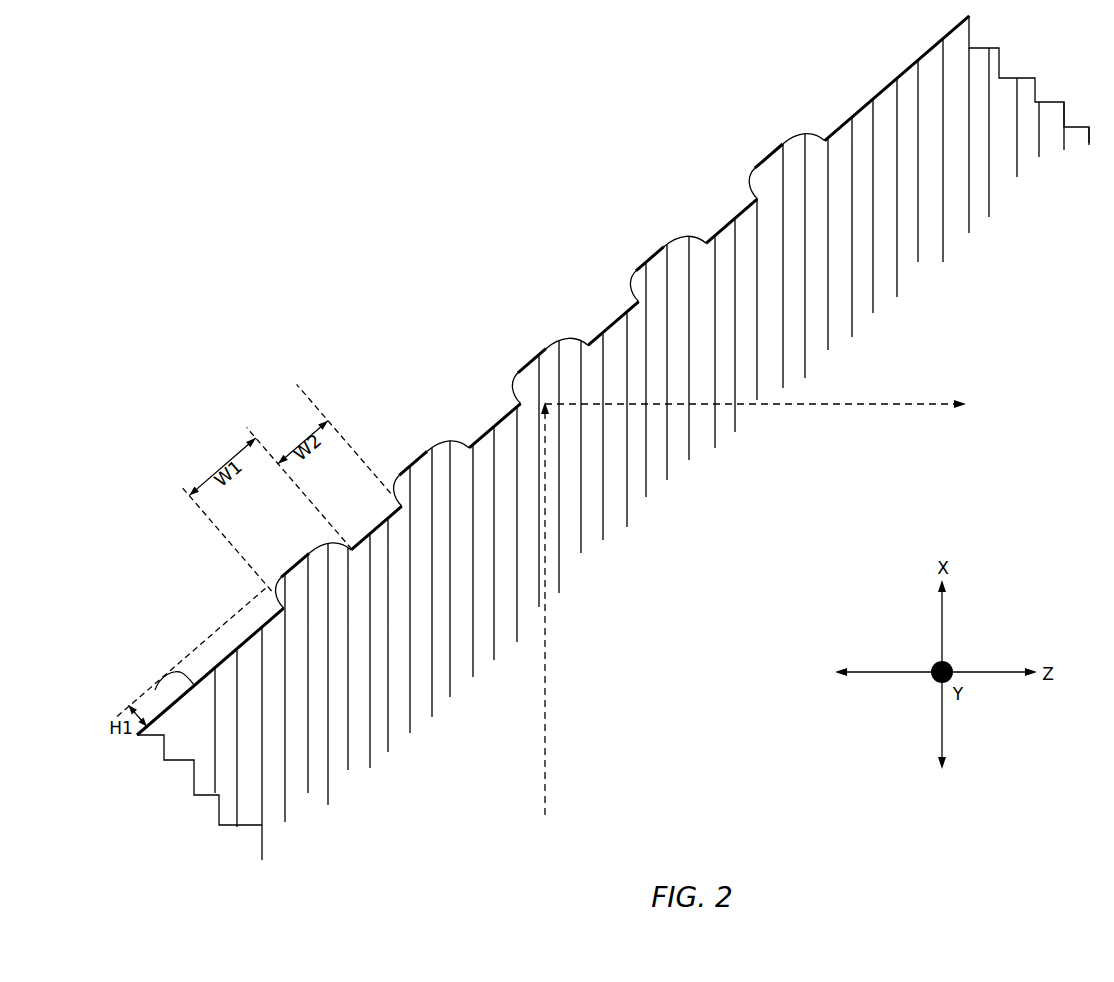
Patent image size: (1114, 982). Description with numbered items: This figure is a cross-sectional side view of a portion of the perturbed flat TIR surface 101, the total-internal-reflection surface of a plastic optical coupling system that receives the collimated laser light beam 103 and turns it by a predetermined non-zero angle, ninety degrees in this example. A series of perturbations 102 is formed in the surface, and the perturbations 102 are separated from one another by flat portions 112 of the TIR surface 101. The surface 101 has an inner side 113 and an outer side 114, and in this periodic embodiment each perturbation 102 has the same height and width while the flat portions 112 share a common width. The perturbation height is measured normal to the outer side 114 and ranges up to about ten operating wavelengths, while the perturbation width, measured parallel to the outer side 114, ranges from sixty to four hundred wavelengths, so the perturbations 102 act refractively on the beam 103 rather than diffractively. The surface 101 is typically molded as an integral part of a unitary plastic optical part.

The perturbed flat TIR surface 101 is at (295, 197).
The perturbations 102 is at (762, 160).
The collimated laser light beam 103 is at (600, 683).
The flat portions 112 is at (848, 119).
The inner side 113 is at (214, 683).
The outer side 114 is at (159, 686).